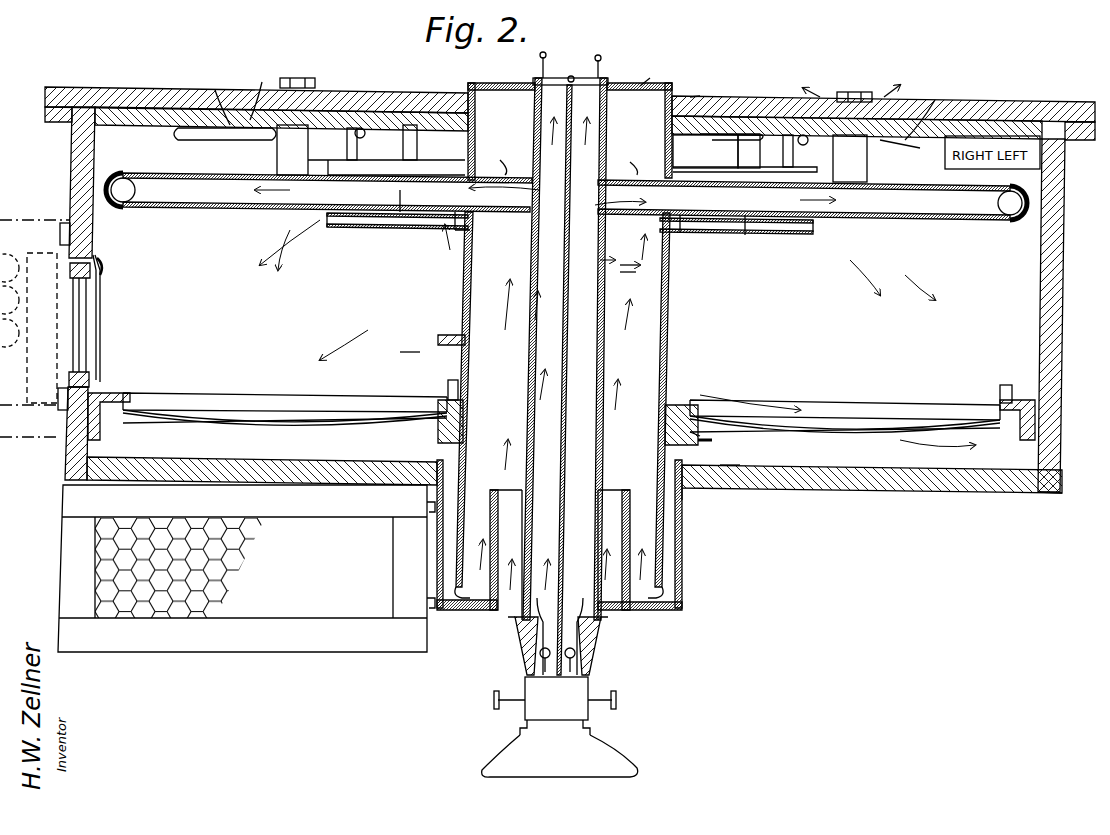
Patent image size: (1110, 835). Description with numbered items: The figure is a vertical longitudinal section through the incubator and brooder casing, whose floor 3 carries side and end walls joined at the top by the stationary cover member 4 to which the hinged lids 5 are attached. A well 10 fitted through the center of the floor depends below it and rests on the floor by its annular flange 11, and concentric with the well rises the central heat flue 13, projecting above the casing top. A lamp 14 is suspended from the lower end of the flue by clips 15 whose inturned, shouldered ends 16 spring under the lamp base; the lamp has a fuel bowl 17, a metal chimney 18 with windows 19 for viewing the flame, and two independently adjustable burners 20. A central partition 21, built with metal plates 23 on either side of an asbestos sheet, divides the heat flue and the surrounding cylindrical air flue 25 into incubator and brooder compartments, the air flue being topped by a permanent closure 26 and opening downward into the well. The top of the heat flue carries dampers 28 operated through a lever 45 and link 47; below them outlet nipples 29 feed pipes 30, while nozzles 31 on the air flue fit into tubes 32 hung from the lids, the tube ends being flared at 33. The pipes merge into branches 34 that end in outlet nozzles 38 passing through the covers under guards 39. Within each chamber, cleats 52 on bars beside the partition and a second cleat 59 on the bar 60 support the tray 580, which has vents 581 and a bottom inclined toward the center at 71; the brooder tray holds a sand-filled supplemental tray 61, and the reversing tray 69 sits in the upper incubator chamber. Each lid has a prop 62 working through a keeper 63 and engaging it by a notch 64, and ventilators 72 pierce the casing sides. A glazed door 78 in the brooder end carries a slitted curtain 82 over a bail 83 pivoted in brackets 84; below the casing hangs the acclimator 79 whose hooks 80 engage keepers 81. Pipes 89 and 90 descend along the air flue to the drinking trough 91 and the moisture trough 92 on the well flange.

The floor 3 is at (846, 490).
The stationary cover member 4 is at (695, 96).
The lid 5 is at (176, 88).
The well 10 is at (684, 494).
The annular flange 11 is at (722, 460).
The central heat flue 13 is at (600, 350).
The lamp 14 is at (590, 690).
The clips 15 is at (520, 632).
The shouldered inturned ends 16 is at (520, 732).
The bowl 17 is at (605, 760).
The chimney 18 is at (582, 648).
The windows 19 is at (540, 655).
The burners 20 is at (555, 704).
The central partition 21 is at (565, 312).
The metal plates 23 is at (636, 161).
The air flue 25 is at (668, 320).
The permanent closure 26 is at (651, 73).
The dampers 28 is at (535, 82).
The outlet nipples 29 is at (511, 161).
The pipes 30 is at (398, 215).
The nozzles 31 is at (455, 235).
The tubes 32 is at (340, 230).
The flared ends 33 is at (690, 167).
The branches 34 is at (125, 205).
The outlet nozzles 38 is at (276, 160).
The guards 39 is at (298, 78).
The lever 45 is at (546, 56).
The link 47 is at (548, 78).
The ventilating tray-supporting cleats 52 is at (445, 412).
The second ventilating cleat 59 is at (105, 395).
The bar 60 is at (1040, 494).
The supplemental tray 61 is at (258, 396).
The prop 62 is at (596, 102).
The keeper 63 is at (358, 148).
The notch 64 is at (925, 168).
The reversing tray 69 is at (1028, 163).
The inclined tray bottom 71 is at (305, 428).
The ventilators 72 is at (178, 134).
The glazed door 78 is at (75, 324).
The acclimator 79 is at (280, 652).
The hooks 80 is at (426, 600).
The keepers 81 is at (62, 230).
The slitted brooder curtain 82 is at (102, 312).
The bail 83 is at (82, 284).
The brackets 84 is at (103, 265).
The pipe 89 is at (452, 333).
The pipe 90 is at (700, 432).
The drinking trough 91 is at (402, 346).
The moisture trough 92 is at (712, 440).
The tray 580 is at (215, 422).
The vents 581 is at (460, 388).